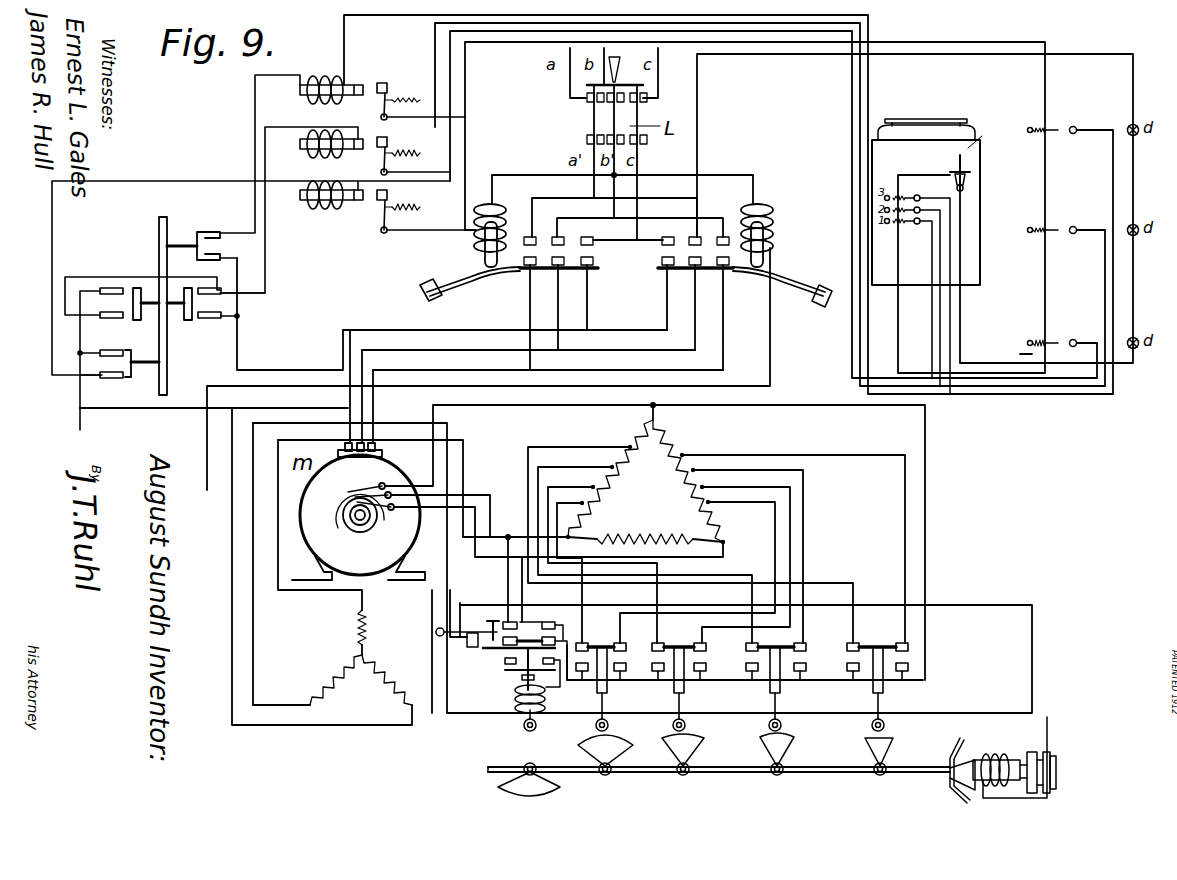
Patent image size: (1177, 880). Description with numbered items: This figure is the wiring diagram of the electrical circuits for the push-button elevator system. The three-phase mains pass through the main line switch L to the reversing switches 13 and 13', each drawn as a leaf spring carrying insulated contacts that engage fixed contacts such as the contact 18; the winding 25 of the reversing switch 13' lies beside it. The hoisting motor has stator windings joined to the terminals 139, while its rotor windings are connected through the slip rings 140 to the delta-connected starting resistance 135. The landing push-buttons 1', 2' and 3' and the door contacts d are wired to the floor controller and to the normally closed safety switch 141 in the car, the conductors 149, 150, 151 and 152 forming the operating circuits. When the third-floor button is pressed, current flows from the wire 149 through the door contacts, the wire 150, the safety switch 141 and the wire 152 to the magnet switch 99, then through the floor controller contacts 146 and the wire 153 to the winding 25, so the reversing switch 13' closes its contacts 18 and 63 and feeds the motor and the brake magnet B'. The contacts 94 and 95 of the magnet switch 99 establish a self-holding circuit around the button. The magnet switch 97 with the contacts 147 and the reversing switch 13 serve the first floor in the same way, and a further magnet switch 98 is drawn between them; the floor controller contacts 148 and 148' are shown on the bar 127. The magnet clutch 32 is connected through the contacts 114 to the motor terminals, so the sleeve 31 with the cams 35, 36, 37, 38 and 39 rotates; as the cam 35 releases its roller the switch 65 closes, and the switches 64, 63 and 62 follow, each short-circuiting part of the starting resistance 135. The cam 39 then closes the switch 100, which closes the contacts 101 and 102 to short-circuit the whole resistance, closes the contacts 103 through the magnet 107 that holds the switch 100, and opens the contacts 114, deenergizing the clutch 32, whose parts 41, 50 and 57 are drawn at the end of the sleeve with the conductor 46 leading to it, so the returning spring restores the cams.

The wire 152 is at (342, 33).
The supply line conductor 151 is at (468, 132).
The wire 149 is at (700, 133).
The wire 150 is at (978, 364).
The magnet switch 99 is at (326, 82).
The electromagnet coil 98 is at (326, 136).
The magnet switch 97 is at (328, 187).
The contact 95 is at (380, 82).
The contact 94 is at (386, 82).
The reversing switch 13' is at (496, 228).
The reversing switch 13 is at (500, 339).
The winding 25 is at (473, 222).
The contact 18 is at (578, 252).
The wire 153 is at (424, 256).
The switch 63 is at (706, 648).
The floor controller contacts 146 is at (212, 230).
The contacts 148 is at (142, 338).
The contacts 148' is at (216, 288).
The floor controller contacts 147 is at (120, 343).
The switch bar 127 is at (167, 376).
The safety switch 141 is at (958, 165).
The terminals 139 is at (383, 456).
The slip rings 140 is at (345, 530).
The motor starting resistance 135 is at (705, 523).
The switch 100 is at (490, 619).
The contact 102 is at (518, 624).
The contact 101 is at (548, 639).
The contacts 114 is at (465, 646).
The contacts 103 is at (520, 664).
The magnet 107 is at (545, 705).
The switch 62 is at (620, 648).
The switch 64 is at (806, 648).
The switch 65 is at (910, 647).
The cam 38 is at (620, 744).
The cam 37 is at (690, 742).
The cam 36 is at (788, 741).
The cam 35 is at (890, 746).
The cam 39 is at (565, 787).
The sleeve 31 is at (840, 775).
The clutch member 50 is at (962, 760).
The coil 41 is at (980, 756).
The clutch plates 57 is at (1046, 750).
The magnet clutch 32 is at (1061, 776).
The conductor 46 is at (1000, 758).
The push-button 3' is at (1052, 119).
The push-button 2' is at (1052, 220).
The push-button 1' is at (1052, 333).
The brake magnet B' is at (361, 657).